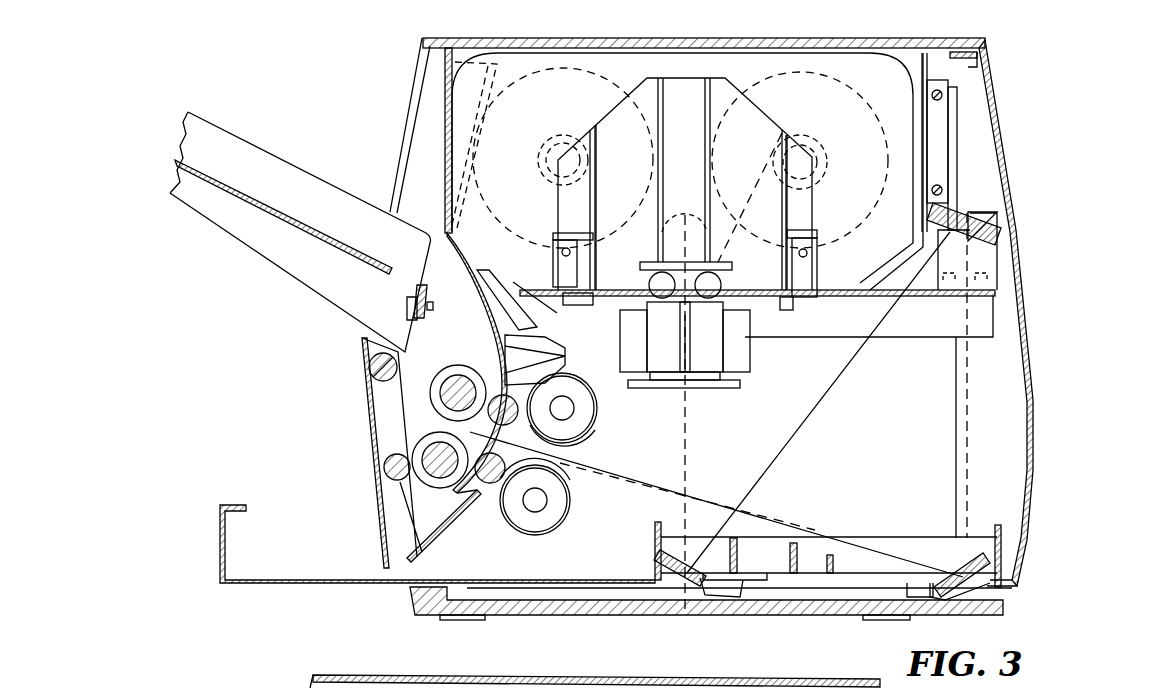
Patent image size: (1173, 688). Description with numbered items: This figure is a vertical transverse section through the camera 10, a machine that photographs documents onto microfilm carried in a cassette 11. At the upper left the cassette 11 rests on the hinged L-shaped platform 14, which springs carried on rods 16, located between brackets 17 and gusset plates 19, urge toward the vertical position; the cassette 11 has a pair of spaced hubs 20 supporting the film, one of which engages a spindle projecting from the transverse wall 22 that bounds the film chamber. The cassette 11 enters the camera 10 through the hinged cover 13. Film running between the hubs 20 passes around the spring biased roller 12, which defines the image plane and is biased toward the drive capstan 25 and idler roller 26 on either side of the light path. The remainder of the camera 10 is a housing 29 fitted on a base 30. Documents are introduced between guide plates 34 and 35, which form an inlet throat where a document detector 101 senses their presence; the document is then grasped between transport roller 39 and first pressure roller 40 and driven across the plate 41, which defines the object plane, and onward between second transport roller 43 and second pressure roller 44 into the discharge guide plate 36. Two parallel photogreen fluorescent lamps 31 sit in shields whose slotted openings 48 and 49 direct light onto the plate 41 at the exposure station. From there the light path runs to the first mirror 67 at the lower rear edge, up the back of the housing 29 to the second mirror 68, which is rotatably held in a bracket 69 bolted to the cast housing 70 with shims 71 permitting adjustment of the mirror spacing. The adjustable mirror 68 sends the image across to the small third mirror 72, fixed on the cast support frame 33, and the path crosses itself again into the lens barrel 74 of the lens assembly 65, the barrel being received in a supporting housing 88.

The camera 10 is at (401, 93).
The cassette 11 is at (806, 80).
The spring biased roller 12 is at (683, 395).
The hinged cover 13 is at (713, 40).
The L-shaped platform 14 is at (770, 122).
The rods 16 is at (563, 224).
The brackets 17 is at (553, 249).
The gusset plates 19 is at (597, 205).
The hubs 20 is at (553, 160).
The transverse wall 22 is at (913, 60).
The drive capstan 25 is at (714, 280).
The idler roller 26 is at (655, 272).
The housing 29 is at (400, 128).
The base 30 is at (780, 608).
The fluorescent lamps 31 is at (574, 408).
The cast support frame 33 is at (913, 535).
The guide plate 34 is at (466, 306).
The guide plate 35 is at (477, 290).
The guide plate 36 is at (448, 520).
The transport roller 39 is at (452, 378).
The first pressure roller 40 is at (487, 363).
The plate 41 is at (440, 408).
The second transport roller 43 is at (440, 488).
The second pressure roller 44 is at (490, 485).
The slotted opening 48 is at (565, 442).
The slotted opening 49 is at (568, 470).
The lens assembly 65 is at (758, 356).
The first mirror 67 is at (975, 560).
The second mirror 68 is at (960, 225).
The bracket 69 is at (990, 213).
The cast housing 70 is at (992, 262).
The shims 71 is at (1002, 298).
The third mirror 72 is at (682, 600).
The lens barrel 74 is at (708, 392).
The housing 88 is at (712, 358).
The document detector 101 is at (565, 362).